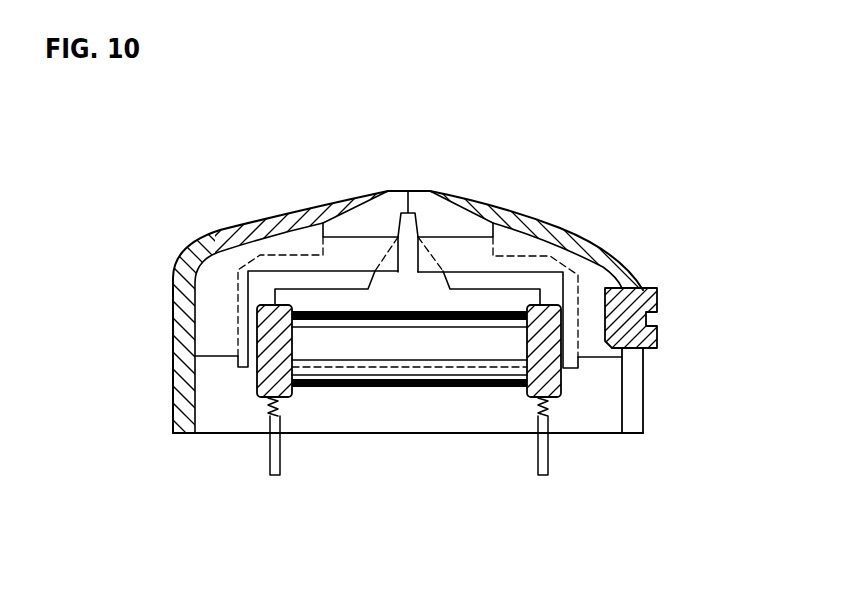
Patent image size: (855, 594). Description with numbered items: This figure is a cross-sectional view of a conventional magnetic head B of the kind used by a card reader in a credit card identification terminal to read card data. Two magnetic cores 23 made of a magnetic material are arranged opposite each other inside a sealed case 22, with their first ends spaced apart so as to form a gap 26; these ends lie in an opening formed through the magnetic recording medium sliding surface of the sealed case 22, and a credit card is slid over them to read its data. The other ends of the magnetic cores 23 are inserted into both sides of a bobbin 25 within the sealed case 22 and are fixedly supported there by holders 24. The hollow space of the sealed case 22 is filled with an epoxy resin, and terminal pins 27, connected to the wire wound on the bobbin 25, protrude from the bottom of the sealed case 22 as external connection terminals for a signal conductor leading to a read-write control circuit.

The sealed case 22 is at (212, 232).
The magnetic core 23 is at (363, 207).
The holder 24 is at (212, 315).
The bobbin 25 is at (257, 390).
The gap 26 is at (411, 191).
The terminal pin 27 is at (276, 465).
The magnetic head B is at (640, 262).